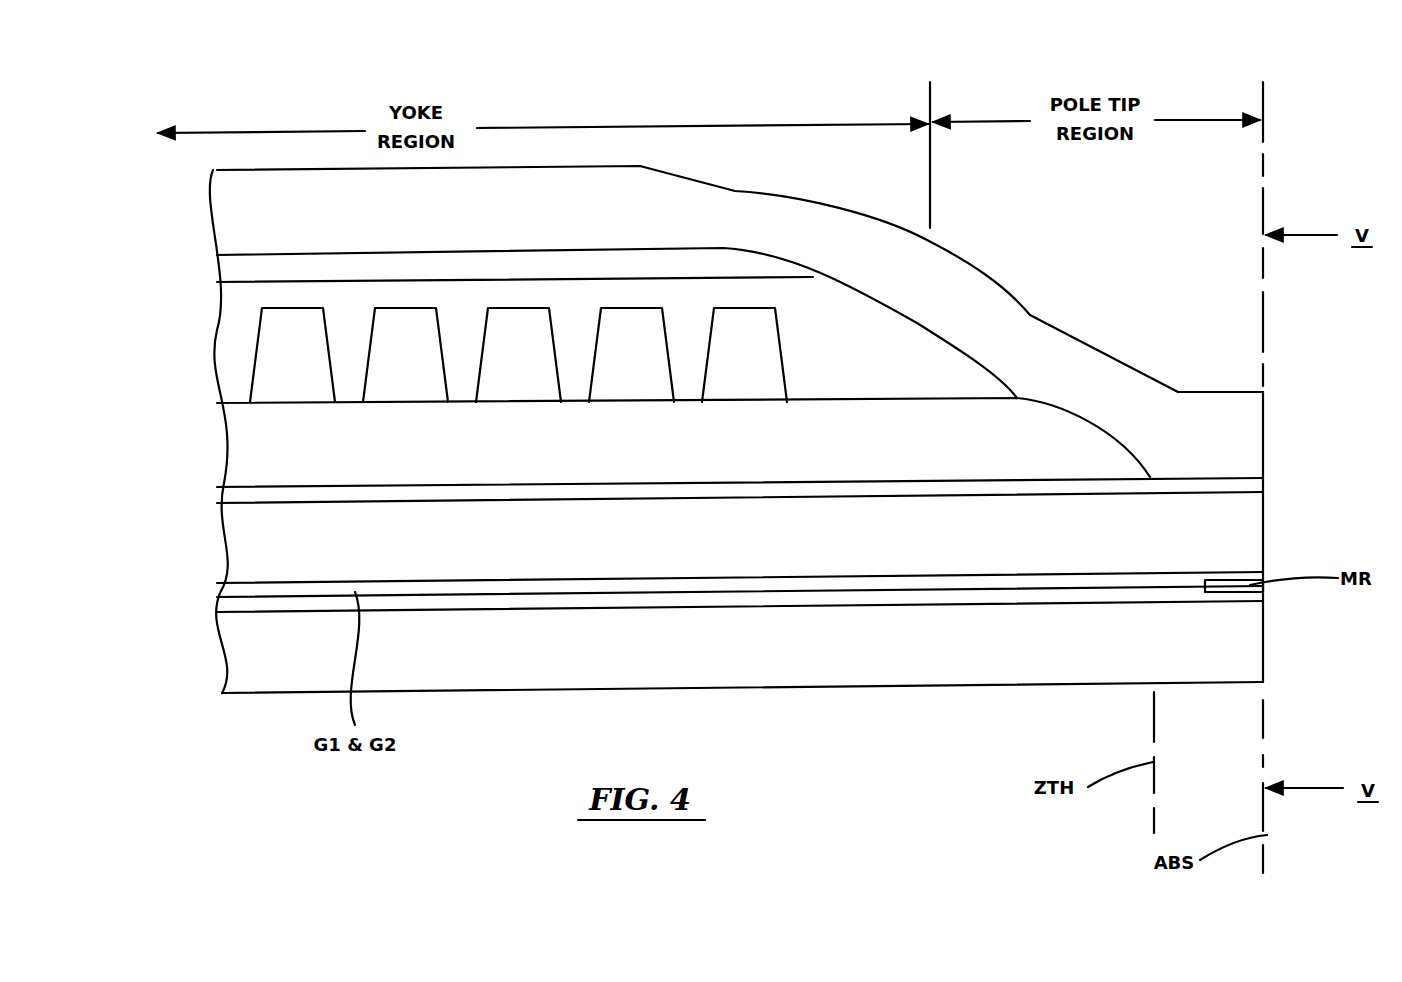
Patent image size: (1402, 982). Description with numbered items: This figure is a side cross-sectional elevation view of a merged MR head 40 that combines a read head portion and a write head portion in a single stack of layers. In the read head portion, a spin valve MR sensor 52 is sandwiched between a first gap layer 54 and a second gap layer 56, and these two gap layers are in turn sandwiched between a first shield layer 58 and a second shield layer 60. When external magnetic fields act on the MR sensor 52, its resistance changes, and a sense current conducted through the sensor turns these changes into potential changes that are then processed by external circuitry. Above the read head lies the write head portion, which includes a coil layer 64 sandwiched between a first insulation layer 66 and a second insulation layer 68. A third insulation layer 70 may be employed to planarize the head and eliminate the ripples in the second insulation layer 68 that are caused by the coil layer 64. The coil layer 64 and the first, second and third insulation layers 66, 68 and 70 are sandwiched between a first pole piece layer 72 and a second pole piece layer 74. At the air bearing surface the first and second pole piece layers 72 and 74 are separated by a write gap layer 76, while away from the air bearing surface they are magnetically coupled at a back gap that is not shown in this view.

The merged magnetic head 40 is at (942, 69).
The spin valve MR sensor 52 is at (1225, 588).
The first gap layer 54 is at (780, 597).
The second gap layer 56 is at (895, 580).
The first shield layer 58 is at (987, 643).
The second shield layer 60 is at (740, 550).
The coil layer 64 is at (522, 320).
The first insulation layer 66 is at (968, 435).
The second insulation layer 68 is at (902, 338).
The third insulation layer 70 is at (497, 263).
The first pole piece layer 72 is at (1043, 547).
The second pole piece layer 74 is at (434, 218).
The write gap layer 76 is at (1242, 483).